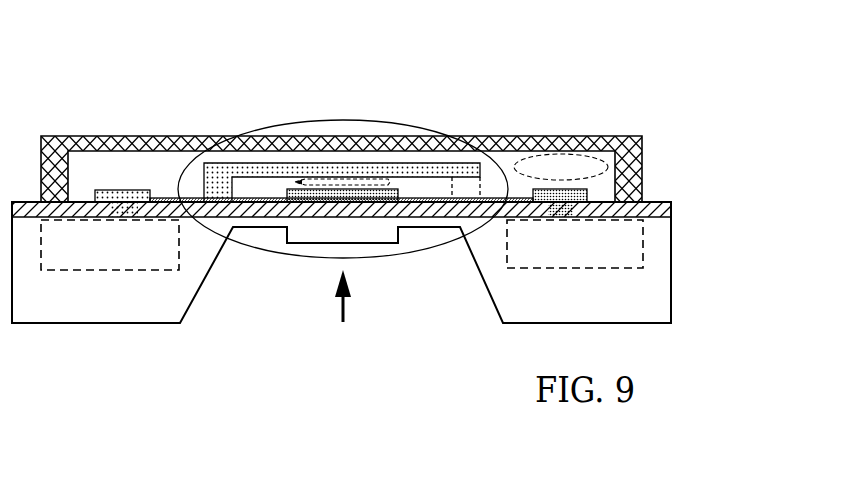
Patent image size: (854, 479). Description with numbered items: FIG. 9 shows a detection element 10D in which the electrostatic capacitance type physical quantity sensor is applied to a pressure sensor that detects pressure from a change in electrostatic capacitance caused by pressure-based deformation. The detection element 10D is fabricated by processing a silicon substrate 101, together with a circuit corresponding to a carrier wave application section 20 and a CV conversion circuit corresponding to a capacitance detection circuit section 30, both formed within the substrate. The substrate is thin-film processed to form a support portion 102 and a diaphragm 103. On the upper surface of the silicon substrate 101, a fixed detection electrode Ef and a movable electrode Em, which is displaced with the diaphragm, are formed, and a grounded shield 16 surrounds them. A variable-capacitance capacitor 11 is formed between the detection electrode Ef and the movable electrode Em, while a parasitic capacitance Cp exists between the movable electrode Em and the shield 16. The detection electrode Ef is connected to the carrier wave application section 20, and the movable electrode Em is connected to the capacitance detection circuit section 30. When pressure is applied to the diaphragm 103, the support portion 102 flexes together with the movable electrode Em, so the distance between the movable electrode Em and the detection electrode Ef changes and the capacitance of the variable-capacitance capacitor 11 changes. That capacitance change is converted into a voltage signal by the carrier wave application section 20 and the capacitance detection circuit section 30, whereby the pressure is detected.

The detection element 10D is at (355, 186).
The silicon substrate 101 is at (657, 240).
The support portion 102 is at (262, 228).
The diaphragm 103 is at (315, 243).
The carrier wave application section 20 is at (95, 270).
The capacitance detection circuit section 30 is at (560, 268).
The shield 16 is at (162, 136).
The detection electrode Ef is at (218, 163).
The movable electrode Em is at (296, 188).
The variable-capacitance capacitor 11 is at (345, 178).
The parasitic capacitance Cp is at (393, 172).